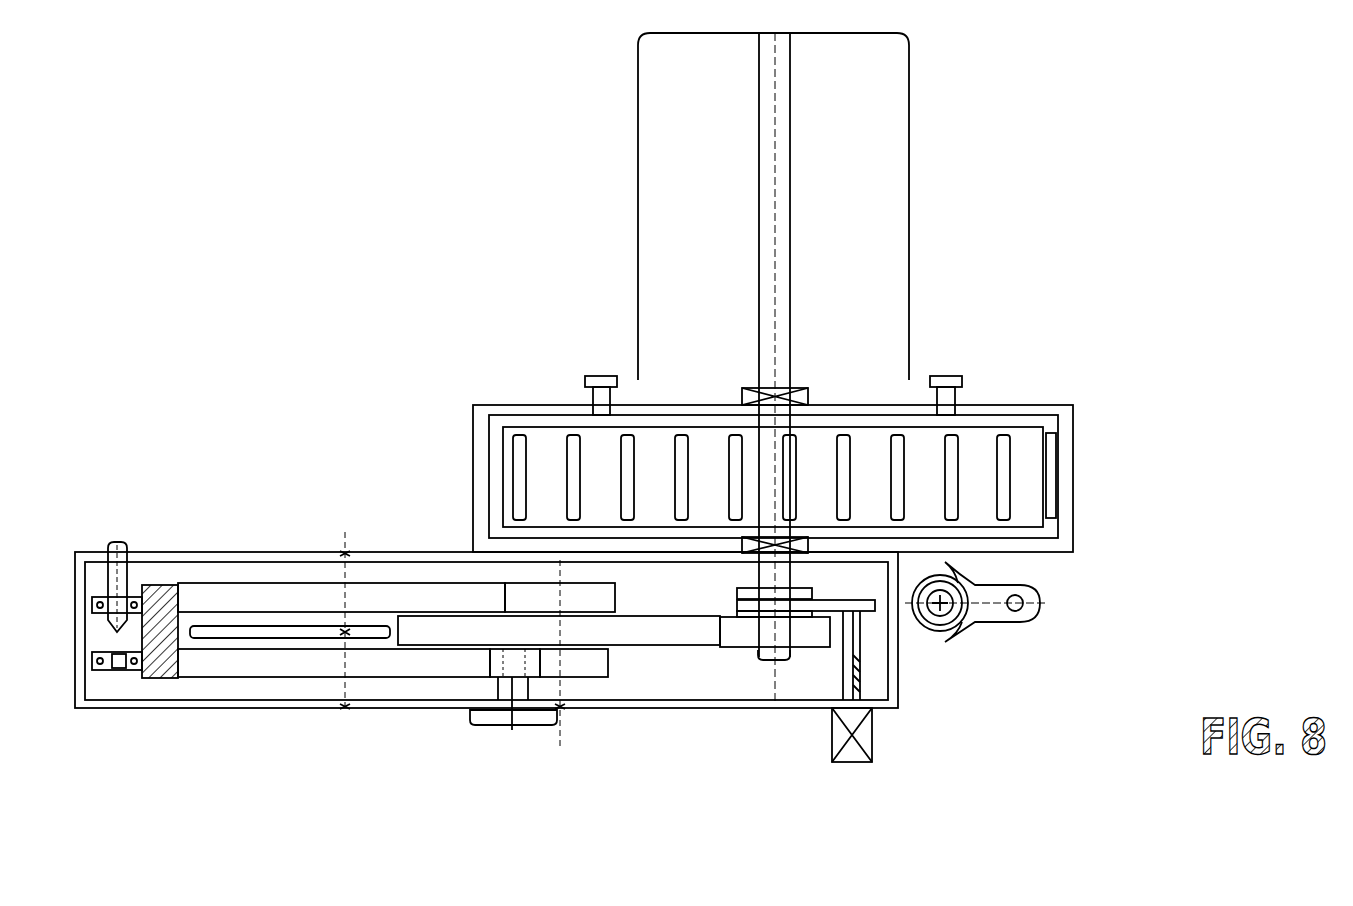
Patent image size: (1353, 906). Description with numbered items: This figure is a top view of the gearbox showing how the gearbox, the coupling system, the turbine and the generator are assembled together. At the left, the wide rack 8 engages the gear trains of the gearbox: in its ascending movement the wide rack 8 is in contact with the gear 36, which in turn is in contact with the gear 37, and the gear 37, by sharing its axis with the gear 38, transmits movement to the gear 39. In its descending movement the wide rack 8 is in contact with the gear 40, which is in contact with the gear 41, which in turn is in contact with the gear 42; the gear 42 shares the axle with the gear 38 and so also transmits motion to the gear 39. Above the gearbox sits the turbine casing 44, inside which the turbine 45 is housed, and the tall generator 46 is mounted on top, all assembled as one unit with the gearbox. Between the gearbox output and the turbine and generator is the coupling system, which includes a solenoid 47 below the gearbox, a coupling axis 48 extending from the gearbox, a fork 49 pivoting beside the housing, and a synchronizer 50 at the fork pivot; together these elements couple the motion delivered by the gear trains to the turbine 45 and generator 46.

The wide rack 8 is at (156, 588).
The gear 36 is at (341, 597).
The gear 37 is at (560, 597).
The gear 38 is at (559, 630).
The gear 39 is at (775, 632).
The gear 40 is at (334, 663).
The gear 41 is at (490, 664).
The gear 42 is at (574, 664).
The turbine casing 44 is at (1064, 406).
The turbine 45 is at (779, 477).
The generator 46 is at (843, 183).
The solenoid 47 is at (847, 750).
The coupling axis 48 is at (856, 653).
The fork 49 is at (991, 598).
The synchronizer 50 is at (948, 619).